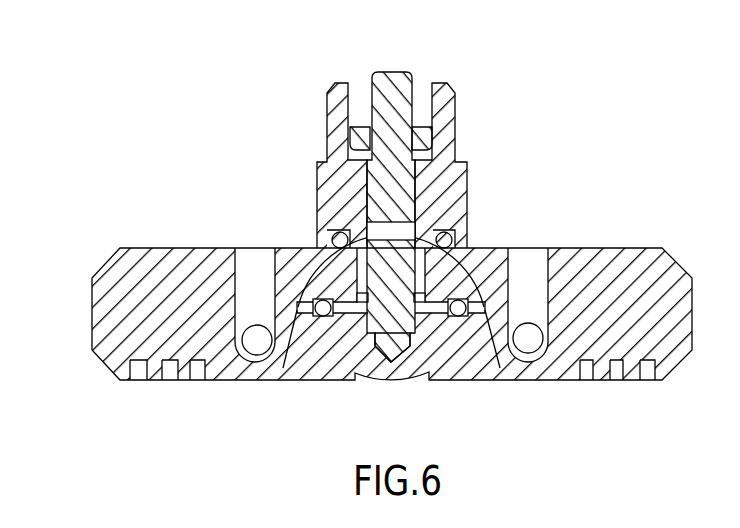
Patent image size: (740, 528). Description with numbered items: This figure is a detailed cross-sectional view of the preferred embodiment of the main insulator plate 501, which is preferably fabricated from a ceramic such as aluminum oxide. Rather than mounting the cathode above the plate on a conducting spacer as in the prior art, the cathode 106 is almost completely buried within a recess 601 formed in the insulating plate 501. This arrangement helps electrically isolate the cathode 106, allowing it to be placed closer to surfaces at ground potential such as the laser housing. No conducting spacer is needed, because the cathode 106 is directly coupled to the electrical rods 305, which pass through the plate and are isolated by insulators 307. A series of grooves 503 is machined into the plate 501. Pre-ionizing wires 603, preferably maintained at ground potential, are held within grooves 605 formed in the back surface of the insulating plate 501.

The cathode 106 is at (393, 380).
The electrical rods 305 is at (388, 72).
The insulators 307 is at (423, 131).
The main insulator plate 501 is at (108, 320).
The grooves 503 is at (140, 384).
The recess 601 is at (477, 370).
The pre-ionizing wires 603 is at (260, 348).
The grooves 605 is at (258, 265).